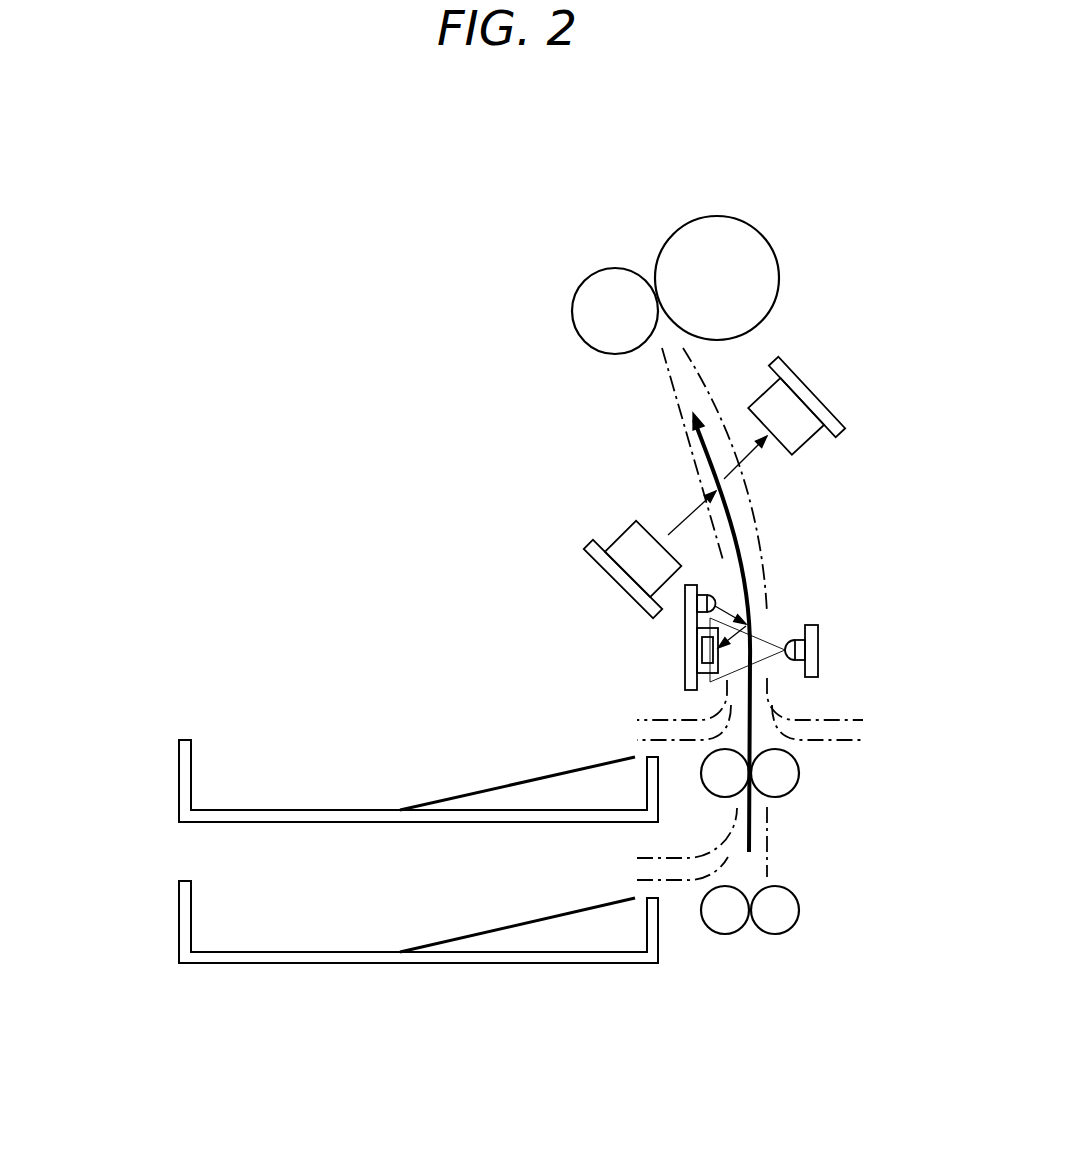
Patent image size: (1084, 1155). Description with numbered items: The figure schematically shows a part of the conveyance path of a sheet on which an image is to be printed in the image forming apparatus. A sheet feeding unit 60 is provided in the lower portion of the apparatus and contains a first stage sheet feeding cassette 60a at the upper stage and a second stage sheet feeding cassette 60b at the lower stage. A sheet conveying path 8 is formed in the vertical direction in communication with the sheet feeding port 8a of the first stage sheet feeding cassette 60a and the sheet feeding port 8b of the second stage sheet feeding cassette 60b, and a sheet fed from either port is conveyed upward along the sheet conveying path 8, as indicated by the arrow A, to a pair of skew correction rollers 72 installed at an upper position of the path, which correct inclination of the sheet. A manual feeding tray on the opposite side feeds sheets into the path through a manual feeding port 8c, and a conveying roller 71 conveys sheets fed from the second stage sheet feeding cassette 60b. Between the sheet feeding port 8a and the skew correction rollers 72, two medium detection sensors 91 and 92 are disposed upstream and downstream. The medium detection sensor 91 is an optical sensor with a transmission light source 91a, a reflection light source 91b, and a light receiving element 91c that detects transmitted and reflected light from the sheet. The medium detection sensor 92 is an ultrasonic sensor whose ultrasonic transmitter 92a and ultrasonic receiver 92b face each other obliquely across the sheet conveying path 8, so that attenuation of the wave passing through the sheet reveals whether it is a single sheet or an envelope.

The skew correction rollers 72 is at (615, 268).
The sheet conveying path 8 is at (690, 383).
The sheet feeding port 8a is at (637, 732).
The sheet feeding port 8b is at (633, 872).
The manual feeding port 8c is at (863, 732).
The arrow A is at (727, 505).
The medium detection sensor 92 is at (697, 452).
The ultrasonic transmitter 92a is at (608, 576).
The ultrasonic receiver 92b is at (822, 399).
The medium detection sensor 91 is at (822, 618).
The transmission light source 91a is at (808, 625).
The reflection light source 91b is at (710, 593).
The light receiving element 91c is at (712, 657).
The conveying roller 71 is at (733, 797).
The sheet feeding unit 60 is at (349, 847).
The first stage sheet feeding cassette 60a is at (178, 797).
The second stage sheet feeding cassette 60b is at (379, 921).